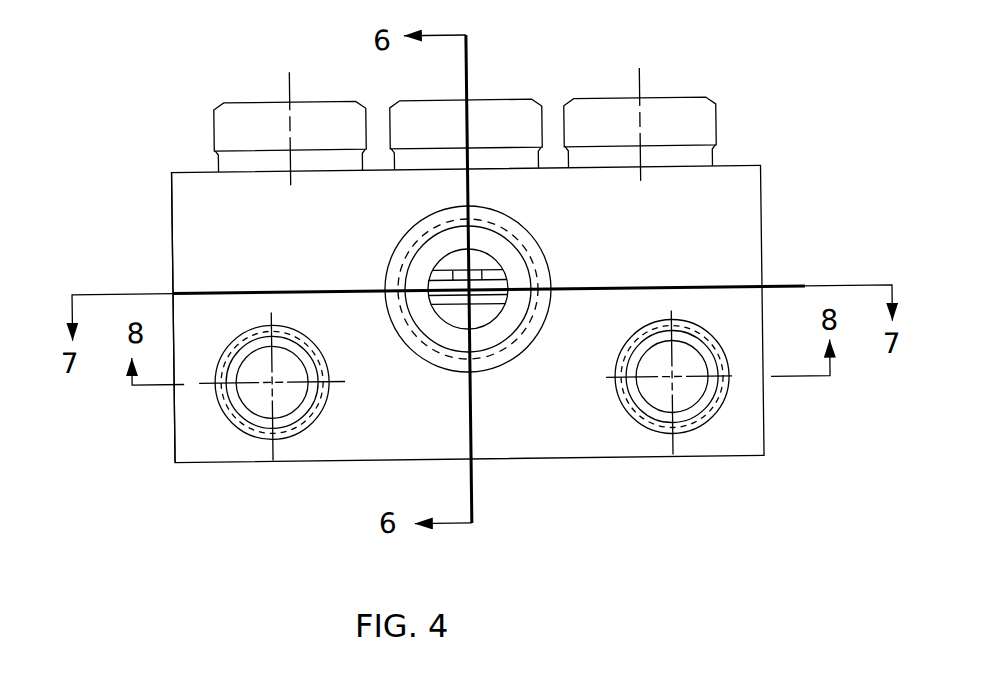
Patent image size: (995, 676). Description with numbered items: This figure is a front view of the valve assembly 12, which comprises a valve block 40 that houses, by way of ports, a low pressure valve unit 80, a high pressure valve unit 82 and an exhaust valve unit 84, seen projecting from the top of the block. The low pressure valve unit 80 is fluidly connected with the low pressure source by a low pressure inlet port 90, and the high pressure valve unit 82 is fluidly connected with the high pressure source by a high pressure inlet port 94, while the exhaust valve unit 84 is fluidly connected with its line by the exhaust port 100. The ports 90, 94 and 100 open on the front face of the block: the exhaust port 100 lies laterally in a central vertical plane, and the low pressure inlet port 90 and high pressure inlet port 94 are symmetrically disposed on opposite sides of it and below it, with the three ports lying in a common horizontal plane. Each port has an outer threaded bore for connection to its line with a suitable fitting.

The valve assembly 12 is at (764, 204).
The valve block 40 is at (174, 204).
The low pressure valve unit 80 is at (215, 112).
The high pressure valve unit 82 is at (715, 101).
The exhaust valve unit 84 is at (527, 99).
The low pressure inlet port 90 is at (261, 402).
The high pressure inlet port 94 is at (687, 395).
The exhaust port 100 is at (481, 314).